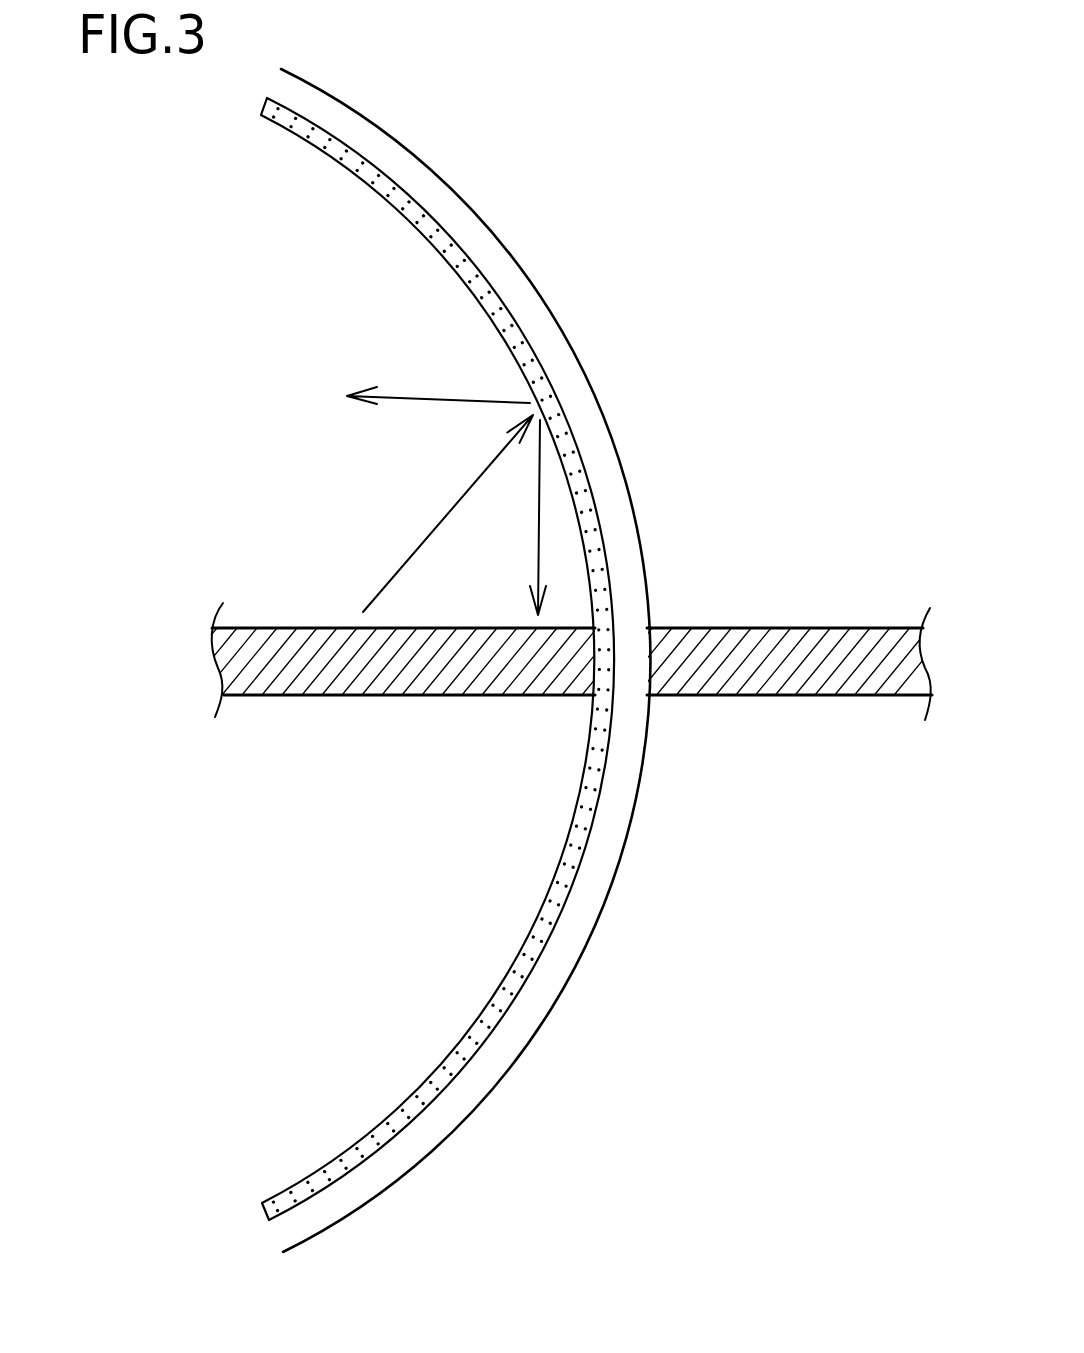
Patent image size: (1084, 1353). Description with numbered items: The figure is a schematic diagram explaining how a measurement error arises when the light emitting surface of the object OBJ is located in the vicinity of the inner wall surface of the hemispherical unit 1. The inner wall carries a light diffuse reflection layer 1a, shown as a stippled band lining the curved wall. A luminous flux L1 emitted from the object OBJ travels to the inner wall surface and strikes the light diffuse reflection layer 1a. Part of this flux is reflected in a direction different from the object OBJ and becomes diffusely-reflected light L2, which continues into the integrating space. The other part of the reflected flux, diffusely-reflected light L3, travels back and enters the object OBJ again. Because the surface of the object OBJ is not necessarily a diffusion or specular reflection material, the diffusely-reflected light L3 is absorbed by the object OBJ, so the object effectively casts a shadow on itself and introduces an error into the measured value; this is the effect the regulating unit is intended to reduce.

The hemispherical unit 1 is at (425, 187).
The light diffuse reflection layer 1a is at (512, 313).
The object OBJ is at (850, 647).
The luminous flux L1 is at (435, 523).
The diffusely-reflected light L2 is at (427, 397).
The diffusely-reflected light L3 is at (538, 527).